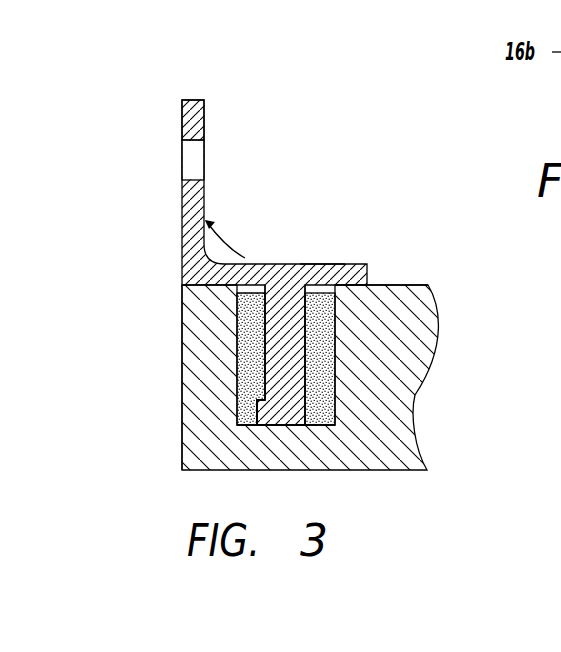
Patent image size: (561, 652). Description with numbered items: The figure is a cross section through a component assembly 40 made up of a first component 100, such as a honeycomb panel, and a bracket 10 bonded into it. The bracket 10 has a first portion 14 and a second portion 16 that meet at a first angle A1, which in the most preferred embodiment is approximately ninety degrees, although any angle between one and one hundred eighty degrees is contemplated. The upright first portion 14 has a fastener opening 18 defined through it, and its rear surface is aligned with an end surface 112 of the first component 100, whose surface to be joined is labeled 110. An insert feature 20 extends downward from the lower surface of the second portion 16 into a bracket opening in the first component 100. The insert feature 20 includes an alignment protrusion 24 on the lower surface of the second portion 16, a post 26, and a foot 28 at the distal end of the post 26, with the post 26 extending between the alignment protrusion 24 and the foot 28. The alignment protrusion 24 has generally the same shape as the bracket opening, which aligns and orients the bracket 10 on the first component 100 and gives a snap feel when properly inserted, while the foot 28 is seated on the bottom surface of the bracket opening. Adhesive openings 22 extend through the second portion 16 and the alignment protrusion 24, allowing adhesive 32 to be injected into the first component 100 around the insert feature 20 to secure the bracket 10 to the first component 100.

The bracket 10 is at (285, 138).
The first portion 14 is at (192, 99).
The second portion 16 is at (268, 263).
The fastener opening 18 is at (190, 162).
The insert feature 20 is at (320, 314).
The adhesive openings 22 is at (307, 282).
The alignment protrusion 24 is at (248, 289).
The post 26 is at (288, 365).
The foot 28 is at (288, 408).
The adhesive 32 is at (248, 377).
The component assembly 40 is at (97, 267).
The first component 100 is at (440, 337).
The surface to be joined 110 is at (403, 284).
The end surface 112 is at (183, 332).
The first angle A1 is at (247, 262).